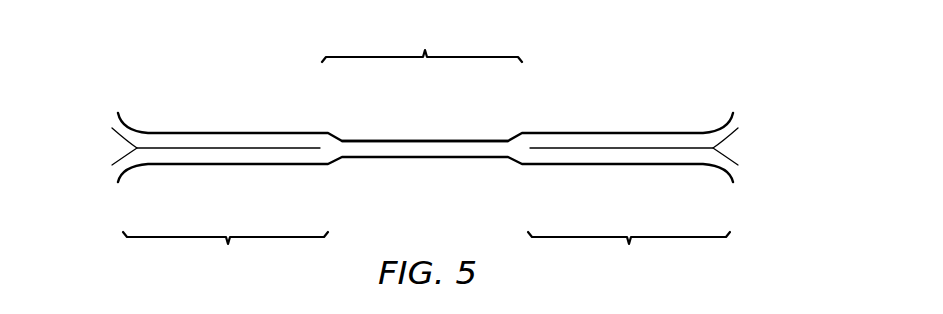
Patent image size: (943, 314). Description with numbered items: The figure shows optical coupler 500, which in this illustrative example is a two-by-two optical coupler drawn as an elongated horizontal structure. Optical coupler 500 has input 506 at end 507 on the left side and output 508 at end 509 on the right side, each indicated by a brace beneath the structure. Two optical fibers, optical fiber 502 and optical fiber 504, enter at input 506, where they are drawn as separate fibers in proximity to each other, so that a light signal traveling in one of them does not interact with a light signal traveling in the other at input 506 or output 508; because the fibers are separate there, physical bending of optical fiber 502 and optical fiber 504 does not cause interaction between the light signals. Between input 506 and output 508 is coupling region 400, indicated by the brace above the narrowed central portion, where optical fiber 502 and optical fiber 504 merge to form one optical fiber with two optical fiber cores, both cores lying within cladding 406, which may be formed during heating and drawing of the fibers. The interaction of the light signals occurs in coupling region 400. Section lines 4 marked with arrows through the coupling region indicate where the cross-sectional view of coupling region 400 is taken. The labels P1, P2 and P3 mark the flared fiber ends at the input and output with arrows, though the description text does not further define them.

The coupling region 400 is at (422, 41).
The cladding 406 is at (480, 139).
The optical coupler 500 is at (564, 63).
The optical fiber 502 is at (240, 131).
The optical fiber 504 is at (240, 166).
The input 506 is at (225, 255).
The end 507 is at (76, 70).
The output 508 is at (629, 255).
The end 509 is at (778, 70).
The first pressure port P1 is at (114, 121).
The second pressure port P2 is at (735, 124).
The third pressure port P3 is at (735, 172).
The section lines 4- 4 is at (430, 98).